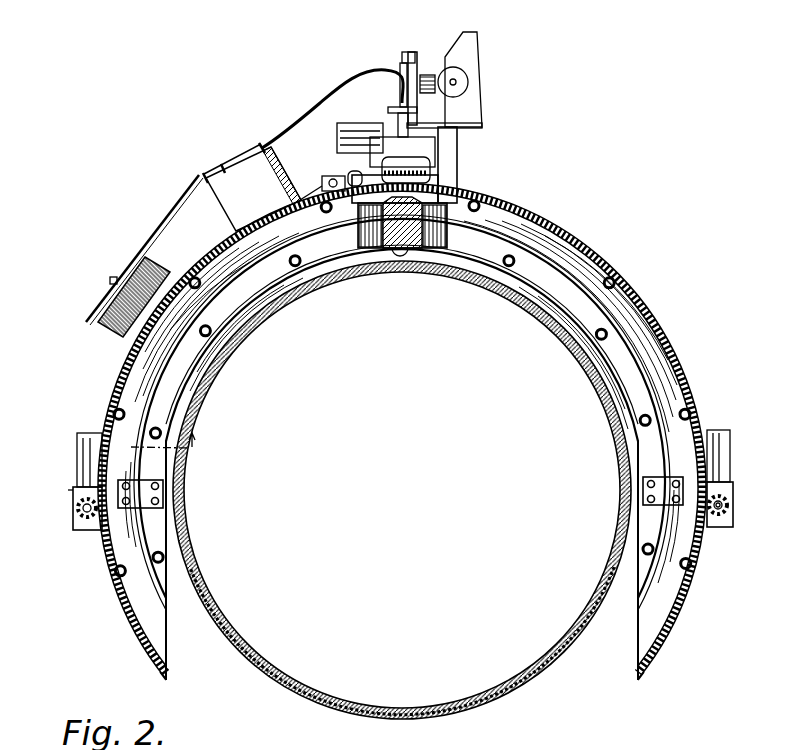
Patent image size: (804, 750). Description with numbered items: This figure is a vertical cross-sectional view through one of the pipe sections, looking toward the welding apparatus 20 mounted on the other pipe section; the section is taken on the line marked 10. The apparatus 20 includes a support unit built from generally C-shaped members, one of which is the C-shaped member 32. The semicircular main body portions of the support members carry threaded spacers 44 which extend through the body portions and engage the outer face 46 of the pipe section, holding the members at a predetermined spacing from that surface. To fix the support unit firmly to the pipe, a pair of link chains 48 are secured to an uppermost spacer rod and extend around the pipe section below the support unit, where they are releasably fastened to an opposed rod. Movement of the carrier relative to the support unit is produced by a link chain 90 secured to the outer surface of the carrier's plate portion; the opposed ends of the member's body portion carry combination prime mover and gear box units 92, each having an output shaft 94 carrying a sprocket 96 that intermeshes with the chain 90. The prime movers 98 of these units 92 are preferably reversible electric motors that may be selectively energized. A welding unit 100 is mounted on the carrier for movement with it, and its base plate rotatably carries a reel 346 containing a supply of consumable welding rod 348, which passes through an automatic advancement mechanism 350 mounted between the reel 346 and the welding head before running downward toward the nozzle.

The section line 10- 10 is at (162, 447).
The welding apparatus 20 is at (463, 184).
The C-shaped member 32 is at (497, 271).
The threaded spacers 44 is at (215, 371).
The outer face 46 is at (396, 707).
The link chains 48 is at (303, 698).
The link chain 90 is at (686, 365).
The combination prime mover and gear box units 92 is at (72, 489).
The output shaft 94 is at (726, 506).
The sprocket 96 is at (92, 529).
The prime movers 98 is at (91, 432).
The welding unit 100 is at (414, 50).
The reel 346 is at (140, 263).
The consumable welding rod 348 is at (110, 328).
The automatic advancement mechanism 350 is at (262, 146).